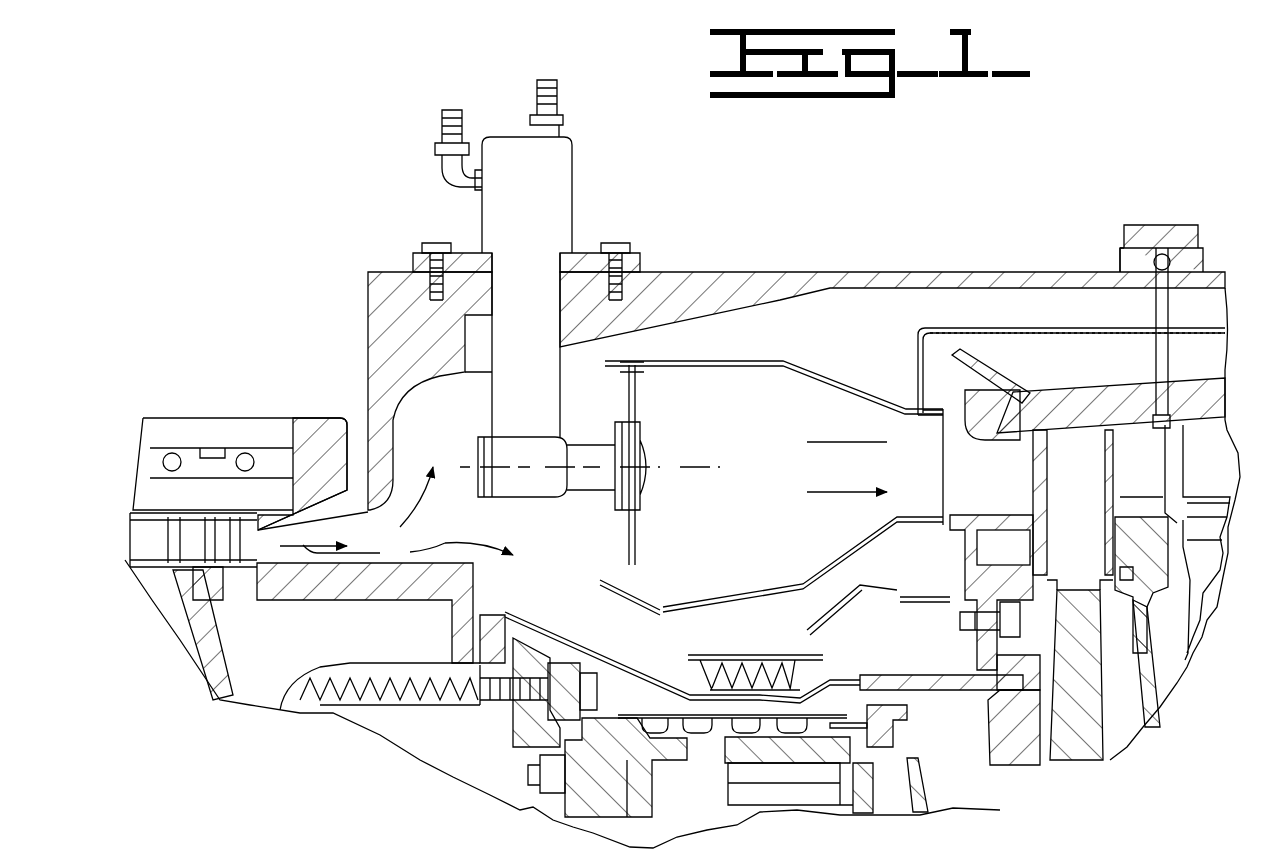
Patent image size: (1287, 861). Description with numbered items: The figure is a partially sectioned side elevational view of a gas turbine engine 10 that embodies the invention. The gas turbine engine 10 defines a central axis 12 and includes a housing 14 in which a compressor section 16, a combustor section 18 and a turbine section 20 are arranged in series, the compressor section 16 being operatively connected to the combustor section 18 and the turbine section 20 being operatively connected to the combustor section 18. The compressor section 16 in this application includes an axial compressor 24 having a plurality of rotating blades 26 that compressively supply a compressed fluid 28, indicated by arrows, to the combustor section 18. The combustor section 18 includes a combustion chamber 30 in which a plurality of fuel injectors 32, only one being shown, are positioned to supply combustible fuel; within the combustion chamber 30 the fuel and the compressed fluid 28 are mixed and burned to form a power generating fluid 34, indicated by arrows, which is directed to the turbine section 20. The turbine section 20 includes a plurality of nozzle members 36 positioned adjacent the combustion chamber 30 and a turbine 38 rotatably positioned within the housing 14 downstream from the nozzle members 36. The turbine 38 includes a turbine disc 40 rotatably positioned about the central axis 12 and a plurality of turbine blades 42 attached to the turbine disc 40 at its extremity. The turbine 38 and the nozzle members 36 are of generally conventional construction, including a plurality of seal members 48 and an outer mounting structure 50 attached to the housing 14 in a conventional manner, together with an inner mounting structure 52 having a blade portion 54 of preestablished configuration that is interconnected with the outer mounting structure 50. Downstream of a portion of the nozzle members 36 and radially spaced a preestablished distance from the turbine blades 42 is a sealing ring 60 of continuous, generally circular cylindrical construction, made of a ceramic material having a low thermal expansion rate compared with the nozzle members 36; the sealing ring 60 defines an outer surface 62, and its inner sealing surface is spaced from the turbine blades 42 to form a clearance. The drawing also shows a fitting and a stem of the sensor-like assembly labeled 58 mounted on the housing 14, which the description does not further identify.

The gas turbine engine 10 is at (905, 235).
The central axis 12 is at (930, 855).
The housing 14 is at (823, 272).
The compressor section 16 is at (255, 380).
The combustor section 18 is at (628, 618).
The turbine section 20 is at (1185, 710).
The axial compressor 24 is at (200, 630).
The rotating blades 26 is at (180, 554).
The compressed fluid 28 is at (385, 565).
The combustion chamber 30 is at (776, 532).
The fuel injector 32 is at (645, 462).
The power generating fluid 34 is at (840, 492).
The nozzle members 36 is at (985, 455).
The turbine 38 is at (1110, 720).
The turbine disc 40 is at (1085, 772).
The turbine blades 42 is at (1088, 478).
The seal members 48 is at (1077, 433).
The outer mounting structure 50 is at (1000, 433).
The inner mounting structure 52 is at (998, 515).
The blade portion 54 is at (575, 182).
The sensor stem 58 is at (560, 390).
The sealing ring 60 is at (497, 137).
The outer surface 62 is at (413, 265).